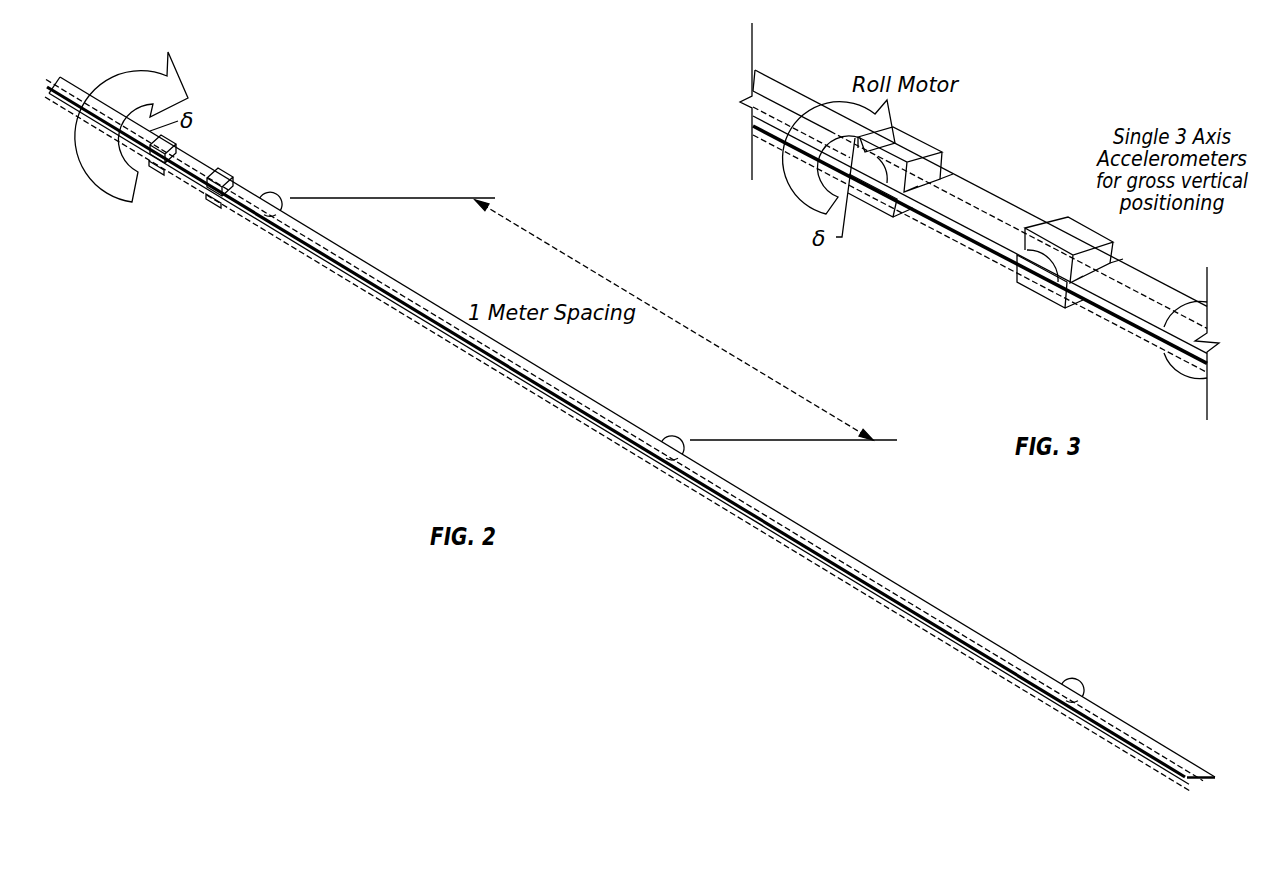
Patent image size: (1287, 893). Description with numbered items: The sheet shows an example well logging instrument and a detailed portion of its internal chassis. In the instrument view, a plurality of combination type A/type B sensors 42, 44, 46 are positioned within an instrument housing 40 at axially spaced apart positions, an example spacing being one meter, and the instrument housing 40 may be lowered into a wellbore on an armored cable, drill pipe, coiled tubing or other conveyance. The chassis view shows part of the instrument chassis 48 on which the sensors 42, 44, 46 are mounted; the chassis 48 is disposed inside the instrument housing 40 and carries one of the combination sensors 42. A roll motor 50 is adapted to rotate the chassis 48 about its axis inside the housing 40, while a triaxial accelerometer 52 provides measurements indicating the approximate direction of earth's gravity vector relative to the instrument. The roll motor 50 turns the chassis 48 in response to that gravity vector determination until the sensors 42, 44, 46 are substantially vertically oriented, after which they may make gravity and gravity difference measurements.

In FIG. 2, the instrument housing 40 is at (337, 268).
In FIG. 2, the combination type A/type B sensor 42 is at (268, 196).
In FIG. 3, the combination type A/type B sensor 42 is at (1183, 372).
In FIG. 2, the combination type A/type B sensor 44 is at (688, 453).
In FIG. 2, the combination type A/type B sensor 46 is at (1075, 684).
In FIG. 3, the instrument chassis 48 is at (1107, 322).
In FIG. 3, the roll motor 50 is at (785, 75).
In FIG. 3, the triaxial accelerometer 52 is at (1068, 216).